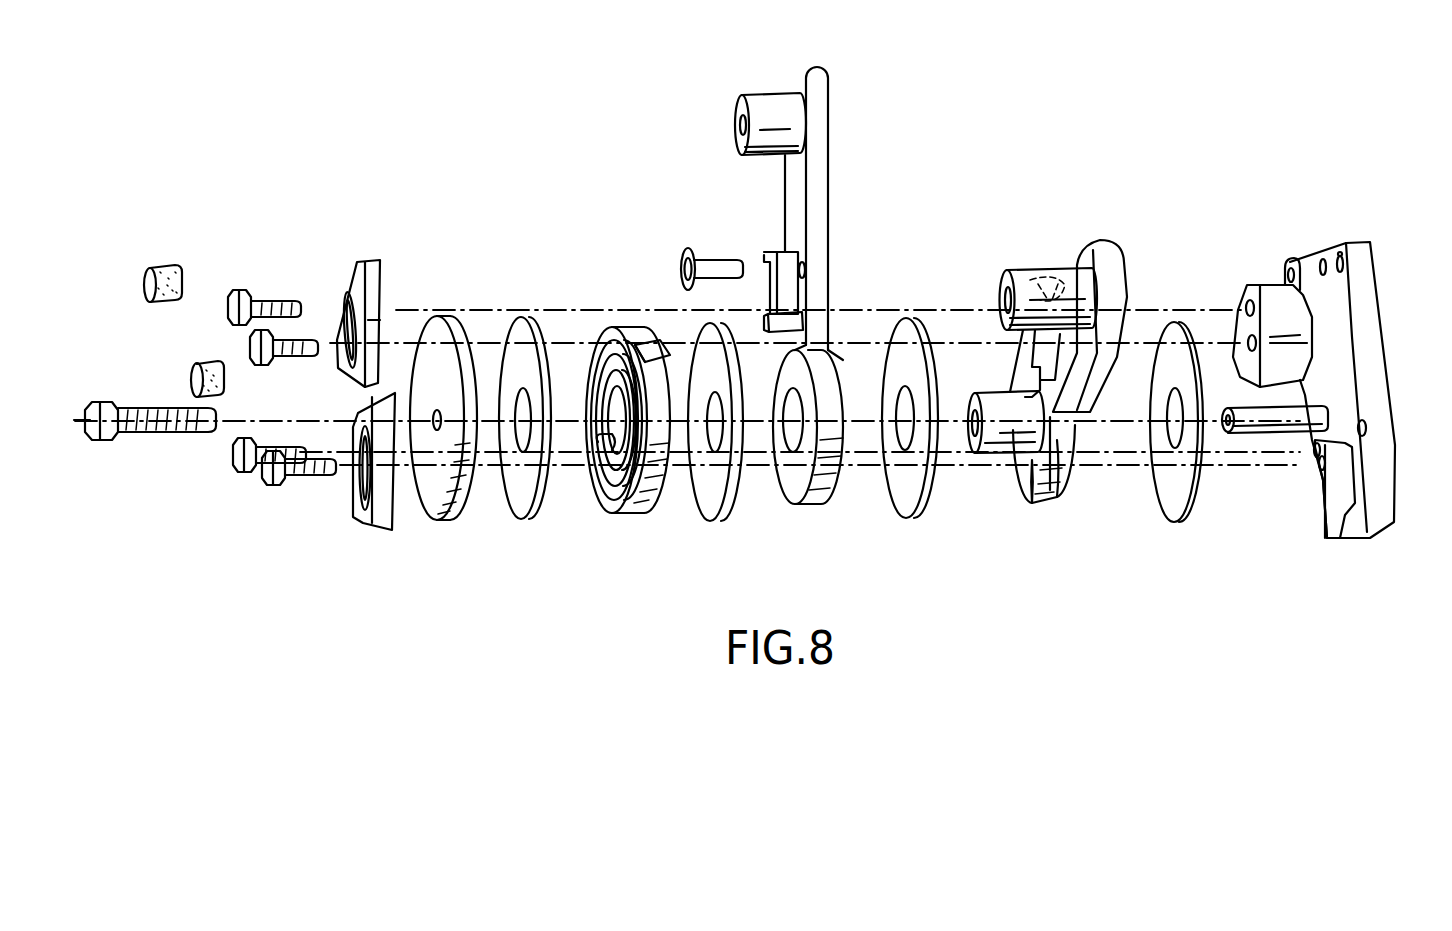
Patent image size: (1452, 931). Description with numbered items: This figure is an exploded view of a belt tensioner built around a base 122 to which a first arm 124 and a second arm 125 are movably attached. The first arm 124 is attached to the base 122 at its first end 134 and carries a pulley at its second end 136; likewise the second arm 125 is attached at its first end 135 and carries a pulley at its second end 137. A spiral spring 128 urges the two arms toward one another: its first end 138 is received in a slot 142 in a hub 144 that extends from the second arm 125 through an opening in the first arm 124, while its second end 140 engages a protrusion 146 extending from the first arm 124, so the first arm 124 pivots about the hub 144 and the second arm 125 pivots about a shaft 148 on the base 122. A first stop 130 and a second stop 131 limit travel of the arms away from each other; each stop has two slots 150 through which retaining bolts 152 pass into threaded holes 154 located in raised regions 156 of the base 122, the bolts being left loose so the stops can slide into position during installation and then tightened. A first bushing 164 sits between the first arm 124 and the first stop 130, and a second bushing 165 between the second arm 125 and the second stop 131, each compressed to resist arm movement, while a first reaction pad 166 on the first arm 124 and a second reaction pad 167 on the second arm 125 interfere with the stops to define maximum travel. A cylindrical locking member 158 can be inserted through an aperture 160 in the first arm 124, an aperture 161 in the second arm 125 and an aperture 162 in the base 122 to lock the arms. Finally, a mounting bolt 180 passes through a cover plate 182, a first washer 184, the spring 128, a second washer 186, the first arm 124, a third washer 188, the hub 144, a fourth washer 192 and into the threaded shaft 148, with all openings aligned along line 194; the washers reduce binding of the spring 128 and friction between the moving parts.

The base 122 is at (1368, 262).
The first arm 124 is at (806, 286).
The second arm 125 is at (1038, 361).
The spring 128 is at (613, 430).
The first stop 130 is at (341, 288).
The second stop 131 is at (386, 520).
The first end of the first arm 134 is at (800, 487).
The first end of the second arm 135 is at (1040, 480).
The second end of the first arm 136 is at (795, 80).
The second end of the second arm 137 is at (1085, 255).
The first end of the spring 138 is at (600, 445).
The second end of the spring 140 is at (648, 342).
The slot 142 is at (968, 435).
The hub 144 is at (986, 460).
The protrusion 146 is at (790, 314).
The shaft 148 is at (1268, 432).
The slot 150 is at (346, 312).
The retaining bolt 152 is at (277, 347).
The threaded hole 154 is at (1302, 366).
The raised region 156 is at (1302, 379).
The locking member 158 is at (712, 260).
The aperture 160 is at (806, 268).
The aperture 161 is at (1022, 280).
The aperture 162 is at (1297, 275).
The first bushing 164 is at (160, 265).
The second bushing 165 is at (207, 362).
The first reaction pad 166 is at (778, 255).
The second reaction pad 167 is at (1030, 352).
The mounting bolt 180 is at (140, 432).
The cover plate 182 is at (436, 335).
The first washer 184 is at (518, 335).
The second washer 186 is at (718, 495).
The third washer 188 is at (903, 338).
The fourth washer 192 is at (1170, 482).
The line 194 is at (78, 425).